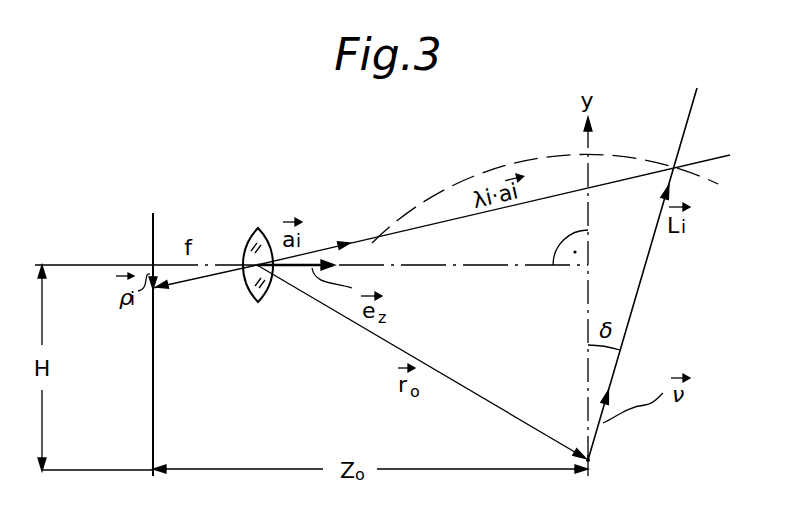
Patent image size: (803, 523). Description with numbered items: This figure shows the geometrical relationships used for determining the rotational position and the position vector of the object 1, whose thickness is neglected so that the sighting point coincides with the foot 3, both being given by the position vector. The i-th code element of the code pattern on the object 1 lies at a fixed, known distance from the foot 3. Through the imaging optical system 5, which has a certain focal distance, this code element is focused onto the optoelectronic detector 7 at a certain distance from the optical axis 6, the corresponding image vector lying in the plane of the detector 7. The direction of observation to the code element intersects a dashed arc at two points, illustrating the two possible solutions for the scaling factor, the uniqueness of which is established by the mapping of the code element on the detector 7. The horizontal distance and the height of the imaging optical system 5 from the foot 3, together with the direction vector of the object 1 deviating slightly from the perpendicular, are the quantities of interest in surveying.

The object 1 is at (645, 272).
The foot 3 is at (592, 458).
The imaging optical system 5 is at (245, 278).
The optical axis 6 is at (393, 266).
The optoelectronic detector 7 is at (152, 255).